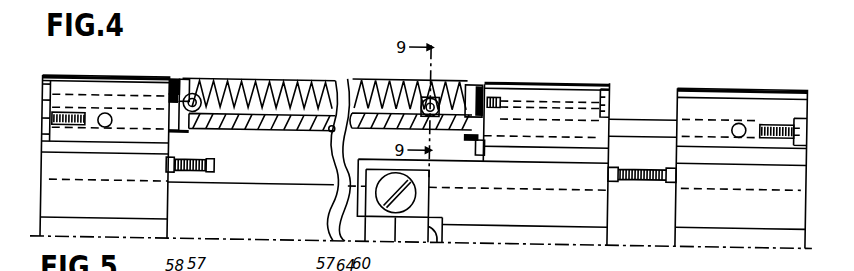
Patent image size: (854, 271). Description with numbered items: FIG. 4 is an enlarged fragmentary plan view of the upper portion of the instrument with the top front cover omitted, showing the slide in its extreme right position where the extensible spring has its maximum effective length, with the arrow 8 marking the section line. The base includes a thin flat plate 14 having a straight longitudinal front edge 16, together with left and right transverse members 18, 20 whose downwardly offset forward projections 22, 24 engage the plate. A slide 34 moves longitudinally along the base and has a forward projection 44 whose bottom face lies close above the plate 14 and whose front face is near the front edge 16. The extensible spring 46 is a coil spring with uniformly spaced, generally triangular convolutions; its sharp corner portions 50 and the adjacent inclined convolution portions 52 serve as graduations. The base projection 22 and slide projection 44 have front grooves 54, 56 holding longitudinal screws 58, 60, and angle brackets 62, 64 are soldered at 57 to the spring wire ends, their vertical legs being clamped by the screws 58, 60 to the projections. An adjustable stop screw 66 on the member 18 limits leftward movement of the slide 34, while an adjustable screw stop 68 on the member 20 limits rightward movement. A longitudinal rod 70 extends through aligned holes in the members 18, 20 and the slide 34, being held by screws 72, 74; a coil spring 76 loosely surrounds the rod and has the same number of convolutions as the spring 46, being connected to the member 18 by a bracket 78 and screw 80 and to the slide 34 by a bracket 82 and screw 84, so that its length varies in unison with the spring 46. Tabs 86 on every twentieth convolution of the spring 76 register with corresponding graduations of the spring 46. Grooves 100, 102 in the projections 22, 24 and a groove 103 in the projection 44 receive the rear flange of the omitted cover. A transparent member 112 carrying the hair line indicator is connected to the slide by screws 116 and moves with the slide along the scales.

The tensioning device 8 is at (243, 57).
The thin flat plate 14 is at (445, 78).
The front edge 16 is at (367, 76).
The transverse member 18 is at (148, 226).
The transverse member 20 is at (760, 210).
The forward projection 22 is at (65, 104).
The forward projection 24 is at (727, 100).
The slide 34 is at (557, 206).
The forward projection 44 is at (580, 110).
The extensible spring 46 is at (222, 77).
The corner portions 50 is at (288, 78).
The inclined convolution portions 52 is at (263, 80).
The longitudinal groove 54 is at (105, 84).
The longitudinal groove 56 is at (548, 79).
The soldered connection 57 is at (187, 95).
The longitudinal screw 58 is at (176, 90).
The longitudinal screw 60 is at (493, 82).
The angle bracket 62 is at (170, 92).
The angle bracket 64 is at (476, 86).
The adjustable stop screw 66 is at (215, 167).
The adjustable screw stop 68 is at (657, 158).
The longitudinal rod 70 is at (637, 111).
The screw 72 is at (45, 146).
The screw 74 is at (780, 108).
The coil spring 76 is at (320, 126).
The bracket 78 is at (185, 137).
The screw 80 is at (178, 141).
The bracket 82 is at (470, 131).
The screw 84 is at (478, 148).
The tabs 86 is at (193, 93).
The groove 100 is at (105, 156).
The groove 102 is at (732, 158).
The groove 103 is at (522, 155).
The transparent member 112 is at (431, 230).
The screws 116 is at (410, 190).